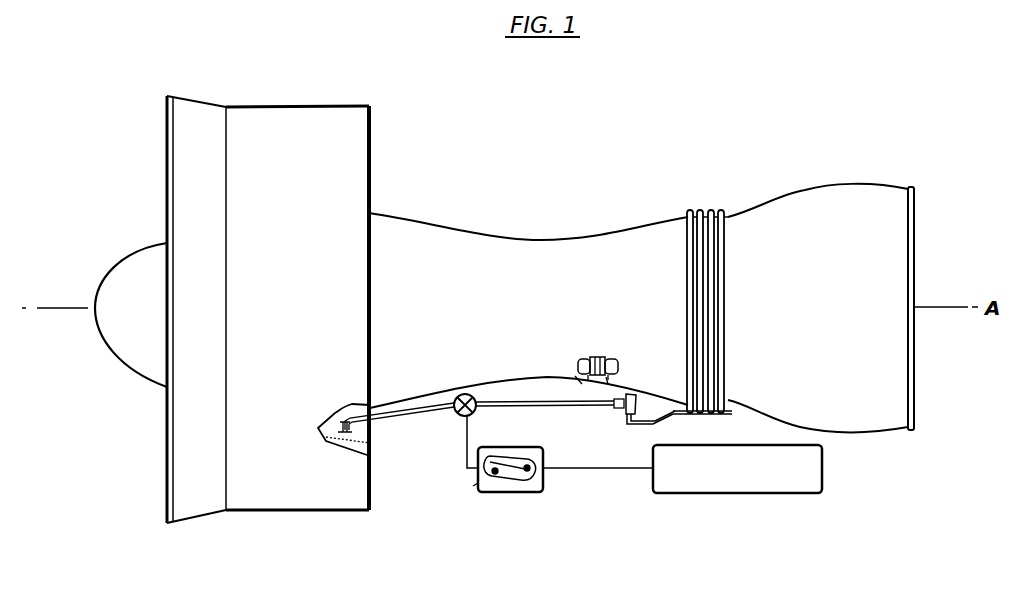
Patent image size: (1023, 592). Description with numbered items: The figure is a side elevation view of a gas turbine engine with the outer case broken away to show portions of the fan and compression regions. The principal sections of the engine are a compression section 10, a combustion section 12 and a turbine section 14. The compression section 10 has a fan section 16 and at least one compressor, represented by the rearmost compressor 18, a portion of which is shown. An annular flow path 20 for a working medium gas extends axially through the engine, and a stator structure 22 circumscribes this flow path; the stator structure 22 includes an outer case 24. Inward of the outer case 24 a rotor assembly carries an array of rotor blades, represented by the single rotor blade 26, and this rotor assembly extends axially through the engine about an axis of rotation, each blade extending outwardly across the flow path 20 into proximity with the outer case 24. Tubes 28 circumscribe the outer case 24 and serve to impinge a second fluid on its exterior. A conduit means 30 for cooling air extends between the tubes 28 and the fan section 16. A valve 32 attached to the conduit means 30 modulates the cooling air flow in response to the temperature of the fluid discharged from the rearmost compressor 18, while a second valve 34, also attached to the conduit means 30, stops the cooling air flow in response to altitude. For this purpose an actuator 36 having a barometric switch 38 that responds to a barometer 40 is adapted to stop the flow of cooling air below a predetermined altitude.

The compression section 10 is at (394, 213).
The combustion section 12 is at (657, 223).
The turbine section 14 is at (796, 197).
The fan section 16 is at (318, 488).
The rearmost compressor 18 is at (583, 362).
The annular flow path 20 is at (621, 367).
The stator structure 22 is at (578, 385).
The outer case 24 is at (606, 385).
The rotor blade 26 is at (598, 358).
The tubes 28 is at (731, 411).
The conduit means 30 is at (521, 398).
The valve 32 is at (636, 397).
The valve 34 is at (458, 413).
The actuator 36 is at (480, 492).
The barometric switch 38 is at (506, 472).
The barometer 40 is at (727, 487).